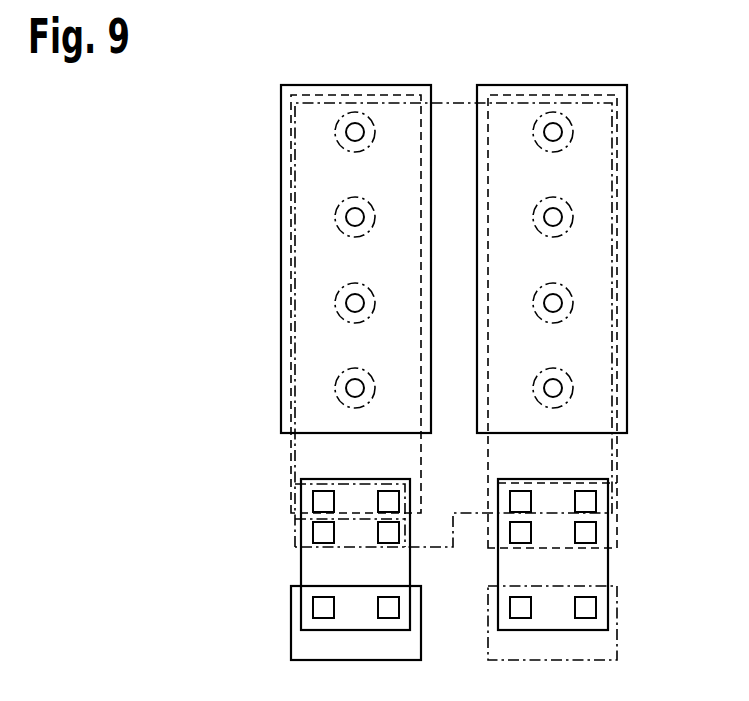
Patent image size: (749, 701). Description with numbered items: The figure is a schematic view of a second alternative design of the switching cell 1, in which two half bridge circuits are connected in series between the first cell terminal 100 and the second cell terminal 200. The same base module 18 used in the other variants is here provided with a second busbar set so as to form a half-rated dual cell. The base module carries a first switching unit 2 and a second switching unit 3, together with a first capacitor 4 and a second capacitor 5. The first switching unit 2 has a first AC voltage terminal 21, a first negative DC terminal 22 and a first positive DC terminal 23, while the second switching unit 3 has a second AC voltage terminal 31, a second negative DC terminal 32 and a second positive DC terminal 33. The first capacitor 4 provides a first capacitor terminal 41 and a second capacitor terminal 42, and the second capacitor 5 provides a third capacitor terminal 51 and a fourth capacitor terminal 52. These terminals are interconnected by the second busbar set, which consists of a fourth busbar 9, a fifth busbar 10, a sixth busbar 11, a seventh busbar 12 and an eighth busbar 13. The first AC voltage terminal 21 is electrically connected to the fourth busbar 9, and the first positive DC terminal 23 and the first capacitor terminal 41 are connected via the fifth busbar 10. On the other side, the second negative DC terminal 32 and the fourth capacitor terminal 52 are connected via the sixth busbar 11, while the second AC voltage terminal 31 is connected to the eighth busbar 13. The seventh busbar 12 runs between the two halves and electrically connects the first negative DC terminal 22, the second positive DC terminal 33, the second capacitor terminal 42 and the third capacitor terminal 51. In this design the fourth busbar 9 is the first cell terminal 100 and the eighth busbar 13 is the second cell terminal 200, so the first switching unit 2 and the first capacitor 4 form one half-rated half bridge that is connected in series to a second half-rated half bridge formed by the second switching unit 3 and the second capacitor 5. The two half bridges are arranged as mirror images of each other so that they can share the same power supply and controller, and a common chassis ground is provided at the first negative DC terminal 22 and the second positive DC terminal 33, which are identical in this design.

The switching cell 1 is at (170, 108).
The first switching unit 2 is at (301, 568).
The second switching unit 3 is at (608, 566).
The first capacitor 4 is at (281, 90).
The second capacitor 5 is at (627, 90).
The fourth busbar 9 is at (291, 605).
The fifth busbar 10 is at (345, 95).
The sixth busbar 11 is at (565, 95).
The seventh busbar 12 is at (445, 100).
The eighth busbar 13 is at (620, 605).
The base module 18 is at (303, 80).
The first AC voltage terminal 21 is at (388, 608).
The first negative DC terminal 22 is at (388, 533).
The first positive DC terminal 23 is at (388, 500).
The second AC voltage terminal 31 is at (520, 608).
The second negative DC terminal 32 is at (520, 533).
The second positive DC terminal 33 is at (520, 500).
The first capacitor terminal 41 is at (352, 135).
The second capacitor terminal 42 is at (352, 220).
The third capacitor terminal 51 is at (556, 135).
The fourth capacitor terminal 52 is at (556, 220).
The first cell terminal 100 is at (303, 653).
The second cell terminal 200 is at (605, 653).